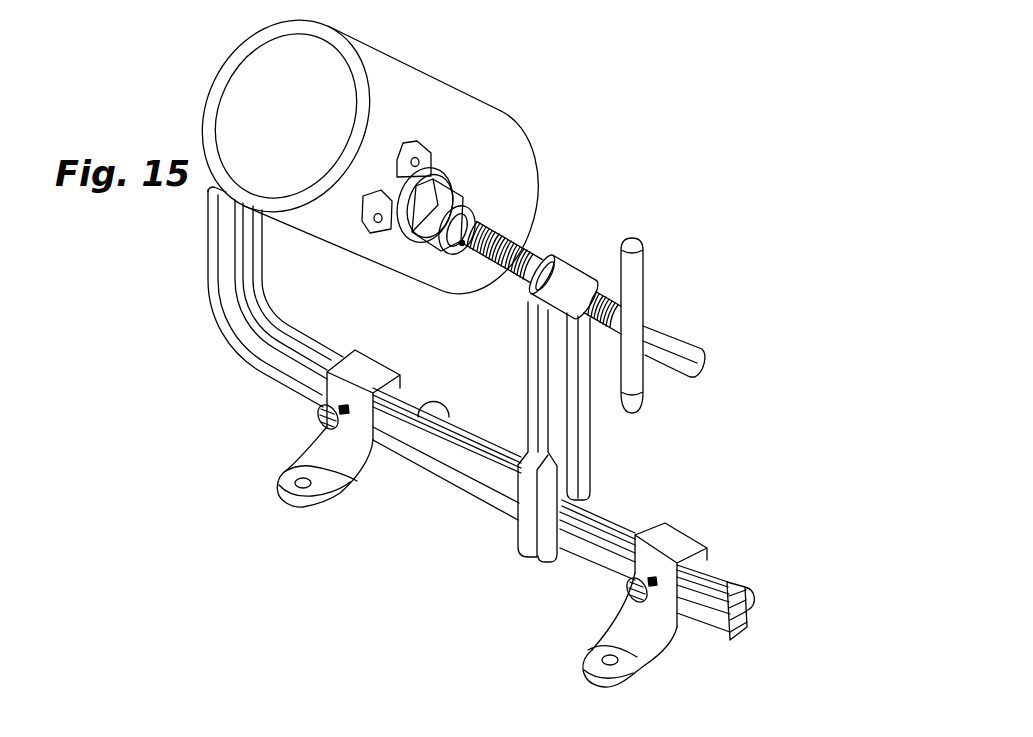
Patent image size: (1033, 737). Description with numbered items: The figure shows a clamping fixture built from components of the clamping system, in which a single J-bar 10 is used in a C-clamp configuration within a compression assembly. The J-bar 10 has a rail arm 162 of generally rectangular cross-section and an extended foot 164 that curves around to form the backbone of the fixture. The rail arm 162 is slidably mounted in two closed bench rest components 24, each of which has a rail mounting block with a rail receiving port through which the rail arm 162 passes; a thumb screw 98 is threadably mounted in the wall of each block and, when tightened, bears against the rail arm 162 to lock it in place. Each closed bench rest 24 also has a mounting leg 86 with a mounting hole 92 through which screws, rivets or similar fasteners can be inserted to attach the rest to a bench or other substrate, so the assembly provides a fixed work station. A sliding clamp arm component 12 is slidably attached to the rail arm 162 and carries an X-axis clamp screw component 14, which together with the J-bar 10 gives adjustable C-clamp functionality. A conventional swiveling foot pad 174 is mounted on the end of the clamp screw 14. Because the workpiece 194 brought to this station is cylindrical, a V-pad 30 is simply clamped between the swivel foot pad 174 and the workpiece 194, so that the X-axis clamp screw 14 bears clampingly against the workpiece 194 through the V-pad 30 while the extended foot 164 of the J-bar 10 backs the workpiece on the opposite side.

The J-bar 10 is at (190, 343).
The sliding clamp arm component 12 is at (615, 435).
The X-axis clamp screw component 14 is at (553, 231).
The closed bench rest component 24 is at (250, 505).
The V-pad 30 is at (456, 138).
The mounting leg 86 is at (607, 647).
The mounting hole 92 is at (617, 699).
The thumb screw 98 is at (320, 419).
The rail arm 162 is at (468, 463).
The extended foot 164 is at (225, 242).
The swiveling foot pad 174 is at (457, 178).
The workpiece 194 is at (430, 97).